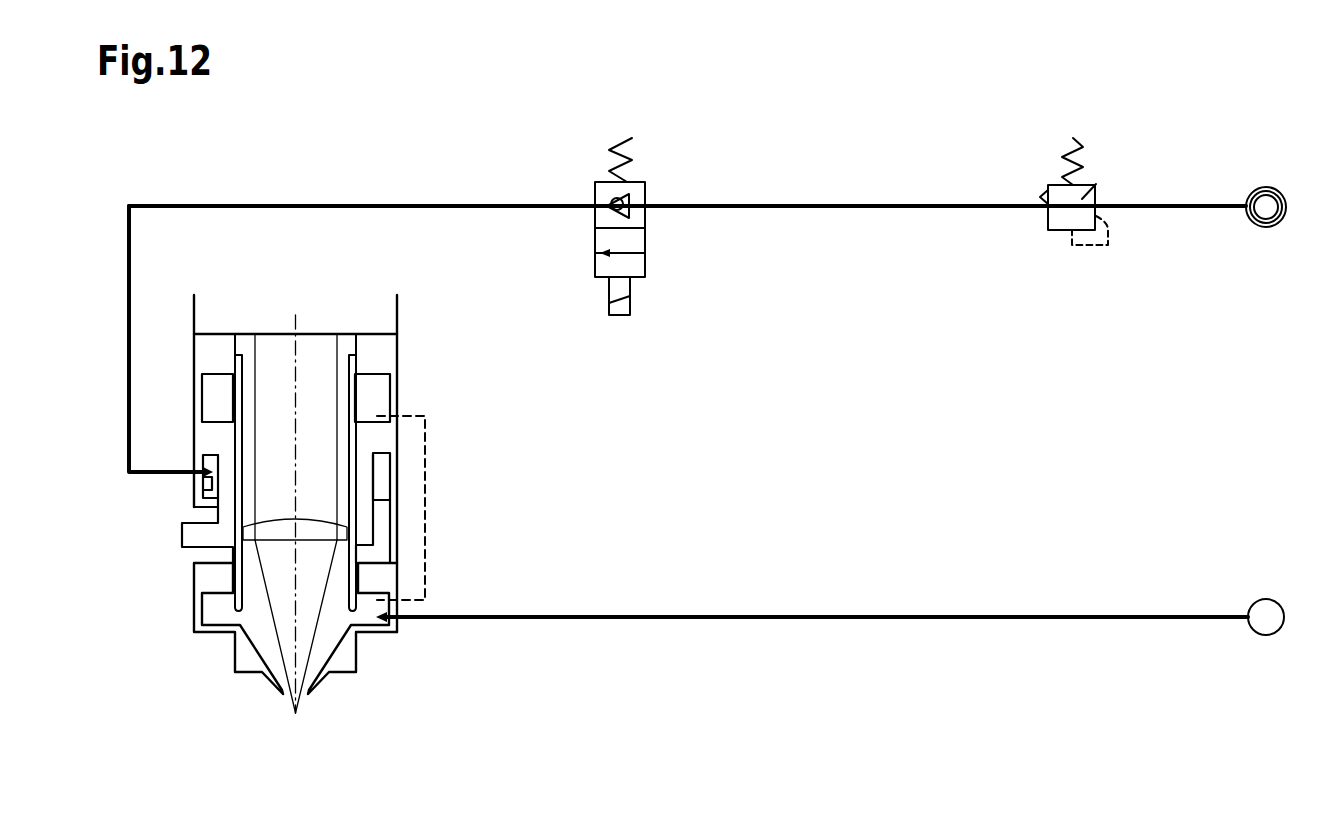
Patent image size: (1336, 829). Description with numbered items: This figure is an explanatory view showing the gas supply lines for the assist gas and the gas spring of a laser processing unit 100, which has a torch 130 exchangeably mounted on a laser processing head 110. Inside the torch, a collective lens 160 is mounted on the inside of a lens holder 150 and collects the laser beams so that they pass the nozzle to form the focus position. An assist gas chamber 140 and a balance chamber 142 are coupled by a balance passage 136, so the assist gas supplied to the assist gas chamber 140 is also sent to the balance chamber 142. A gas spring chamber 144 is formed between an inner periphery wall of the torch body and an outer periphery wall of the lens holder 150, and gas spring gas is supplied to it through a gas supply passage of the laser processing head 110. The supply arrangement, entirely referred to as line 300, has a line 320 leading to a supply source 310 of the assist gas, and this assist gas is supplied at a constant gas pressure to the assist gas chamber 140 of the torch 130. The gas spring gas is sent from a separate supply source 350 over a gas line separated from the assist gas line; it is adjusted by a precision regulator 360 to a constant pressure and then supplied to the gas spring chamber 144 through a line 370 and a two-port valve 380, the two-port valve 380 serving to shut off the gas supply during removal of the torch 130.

The laser processing unit 100 is at (455, 320).
The laser processing head 110 is at (362, 318).
The torch 130 is at (470, 535).
The balance passage 136 is at (425, 565).
The assist gas chamber 140 is at (370, 613).
The balance chamber 142 is at (372, 393).
The gas spring chamber 144 is at (205, 488).
The lens holder 150 is at (365, 437).
The collective lens 160 is at (318, 525).
The line 300 is at (865, 133).
The supply source of the assist gas 310 is at (1268, 636).
The line 320 is at (965, 625).
The supply source 350 is at (1264, 195).
The precision regulator 360 is at (1093, 185).
The line 370 is at (873, 207).
The two-port valve 380 is at (606, 192).